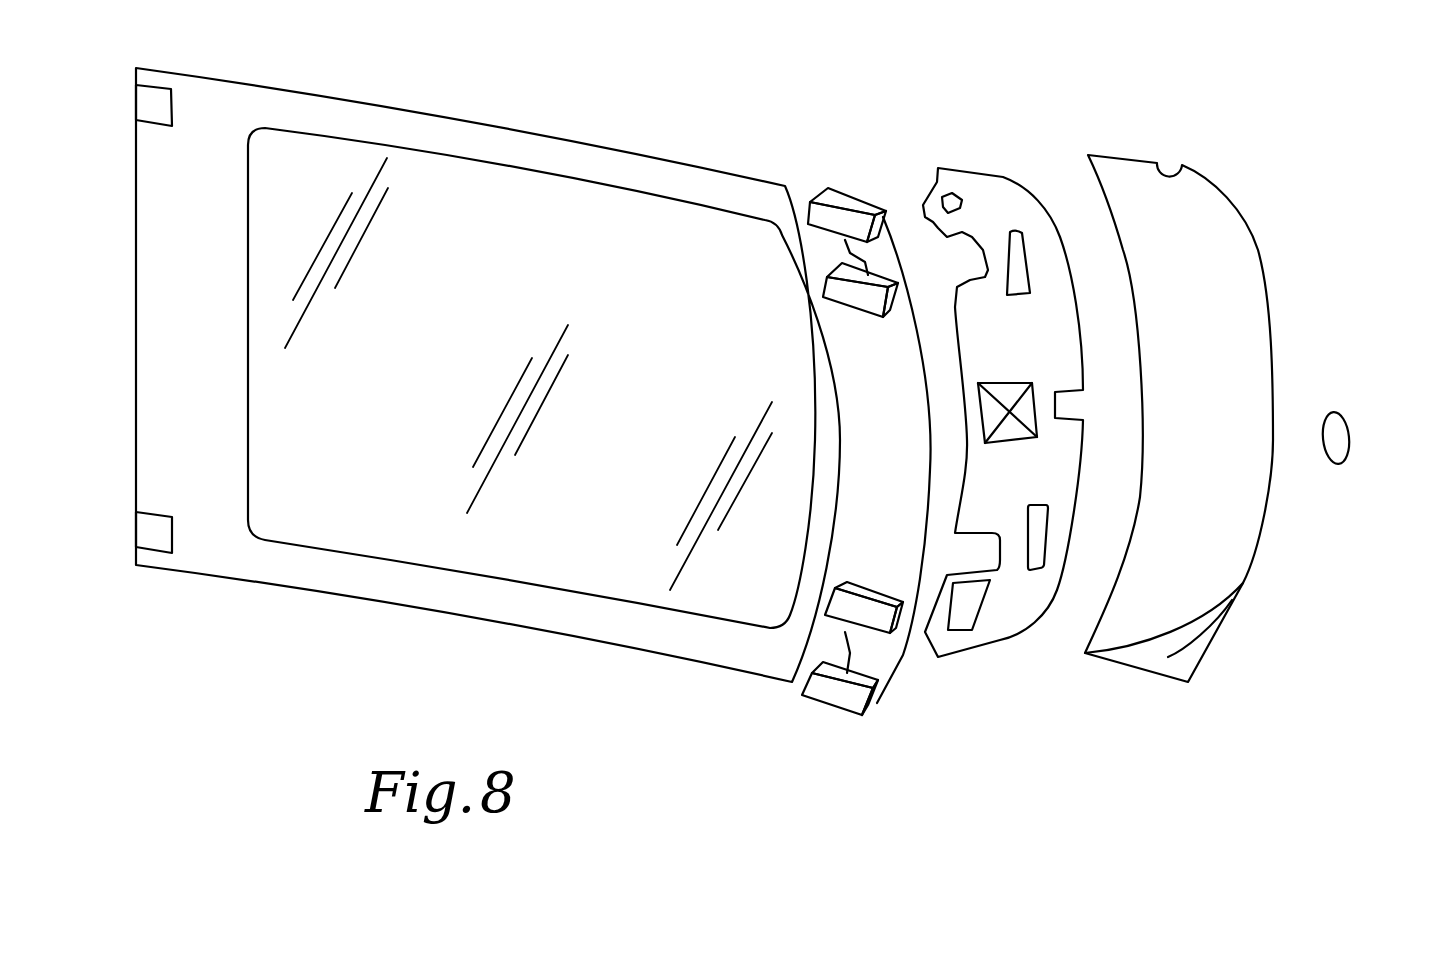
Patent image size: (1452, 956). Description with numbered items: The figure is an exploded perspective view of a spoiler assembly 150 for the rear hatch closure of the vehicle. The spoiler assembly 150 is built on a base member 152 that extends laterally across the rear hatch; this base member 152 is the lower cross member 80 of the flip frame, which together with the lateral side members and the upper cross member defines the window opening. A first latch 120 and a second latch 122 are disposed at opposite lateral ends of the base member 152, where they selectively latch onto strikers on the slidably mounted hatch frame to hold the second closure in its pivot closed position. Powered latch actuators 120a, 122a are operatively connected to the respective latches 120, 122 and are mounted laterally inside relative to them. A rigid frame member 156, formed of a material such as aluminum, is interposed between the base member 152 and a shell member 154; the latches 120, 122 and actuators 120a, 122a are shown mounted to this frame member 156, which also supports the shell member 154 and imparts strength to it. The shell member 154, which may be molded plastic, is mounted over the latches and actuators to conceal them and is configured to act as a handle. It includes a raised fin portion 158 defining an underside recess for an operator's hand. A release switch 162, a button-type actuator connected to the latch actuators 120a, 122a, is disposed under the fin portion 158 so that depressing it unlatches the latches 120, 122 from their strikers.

The spoiler assembly 150 is at (1233, 98).
The lower cross member 80 is at (903, 657).
The base member 152 is at (598, 411).
The first latch 120 is at (832, 698).
The latch actuator 120a is at (865, 592).
The second latch 122 is at (848, 192).
The latch actuator 122a is at (853, 297).
The shell member 154 is at (1220, 525).
The frame member 156 is at (1005, 197).
The fin portion 158 is at (1237, 602).
The release switch 162 is at (1337, 422).